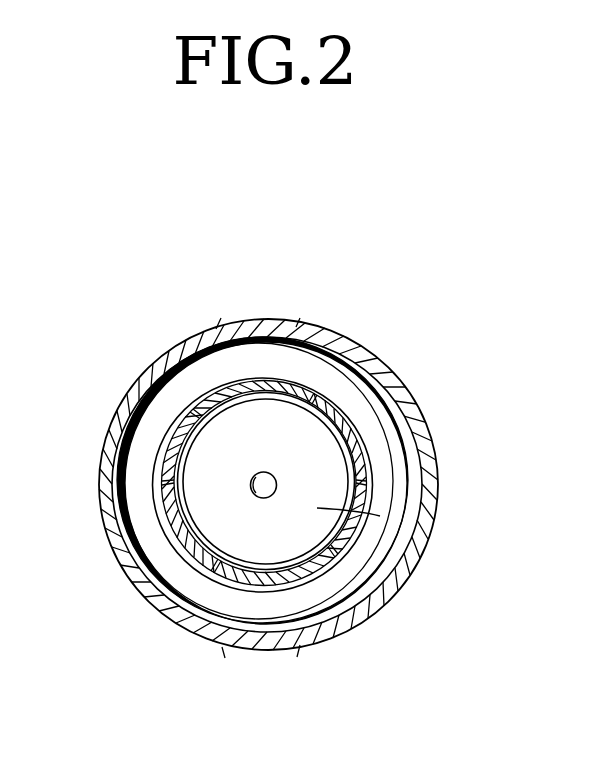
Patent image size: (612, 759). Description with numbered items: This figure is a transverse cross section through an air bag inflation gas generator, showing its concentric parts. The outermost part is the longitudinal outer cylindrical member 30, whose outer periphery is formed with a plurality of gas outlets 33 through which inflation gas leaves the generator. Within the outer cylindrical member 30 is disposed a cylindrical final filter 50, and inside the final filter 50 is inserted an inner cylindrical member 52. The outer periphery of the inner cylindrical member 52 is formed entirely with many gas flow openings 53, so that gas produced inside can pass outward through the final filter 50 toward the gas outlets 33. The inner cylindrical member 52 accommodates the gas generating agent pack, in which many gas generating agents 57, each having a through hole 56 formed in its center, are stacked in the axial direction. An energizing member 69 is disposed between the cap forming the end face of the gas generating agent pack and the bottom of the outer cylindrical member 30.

The outer cylindrical member 30 is at (381, 371).
The gas outlets 33 is at (297, 325).
The final filter 50 is at (392, 513).
The inner cylindrical member 52 is at (403, 437).
The gas flow openings 53 is at (167, 507).
The through hole 56 is at (258, 497).
The gas generating agents 57 is at (380, 516).
The energizing member 69 is at (335, 527).